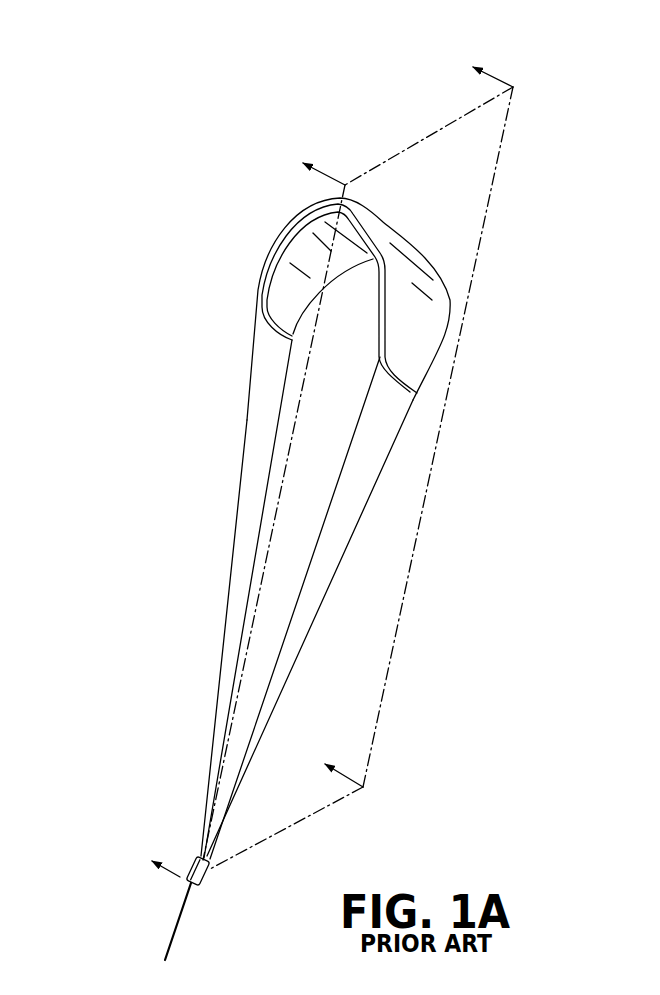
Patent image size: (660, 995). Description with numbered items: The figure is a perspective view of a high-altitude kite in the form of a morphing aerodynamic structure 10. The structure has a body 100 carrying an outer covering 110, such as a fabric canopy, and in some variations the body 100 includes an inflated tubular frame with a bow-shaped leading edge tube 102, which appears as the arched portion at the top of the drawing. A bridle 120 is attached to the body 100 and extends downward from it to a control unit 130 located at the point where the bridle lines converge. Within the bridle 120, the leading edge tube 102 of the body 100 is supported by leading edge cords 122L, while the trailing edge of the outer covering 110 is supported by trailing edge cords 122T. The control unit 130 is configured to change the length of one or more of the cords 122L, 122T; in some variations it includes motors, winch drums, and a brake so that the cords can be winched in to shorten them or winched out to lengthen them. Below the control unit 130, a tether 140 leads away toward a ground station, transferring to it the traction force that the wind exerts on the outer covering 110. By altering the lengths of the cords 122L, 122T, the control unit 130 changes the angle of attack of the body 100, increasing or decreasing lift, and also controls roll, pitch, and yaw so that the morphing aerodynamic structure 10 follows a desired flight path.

The morphing aerodynamic structure 10 is at (536, 81).
The body 100 is at (429, 170).
The leading edge tube 102 is at (279, 242).
The outer covering 110 is at (386, 221).
The bridle 120 is at (301, 589).
The leading edge cords 122L is at (246, 410).
The trailing edge cords 122T is at (291, 362).
The control unit 130 is at (218, 884).
The tether 140 is at (183, 907).